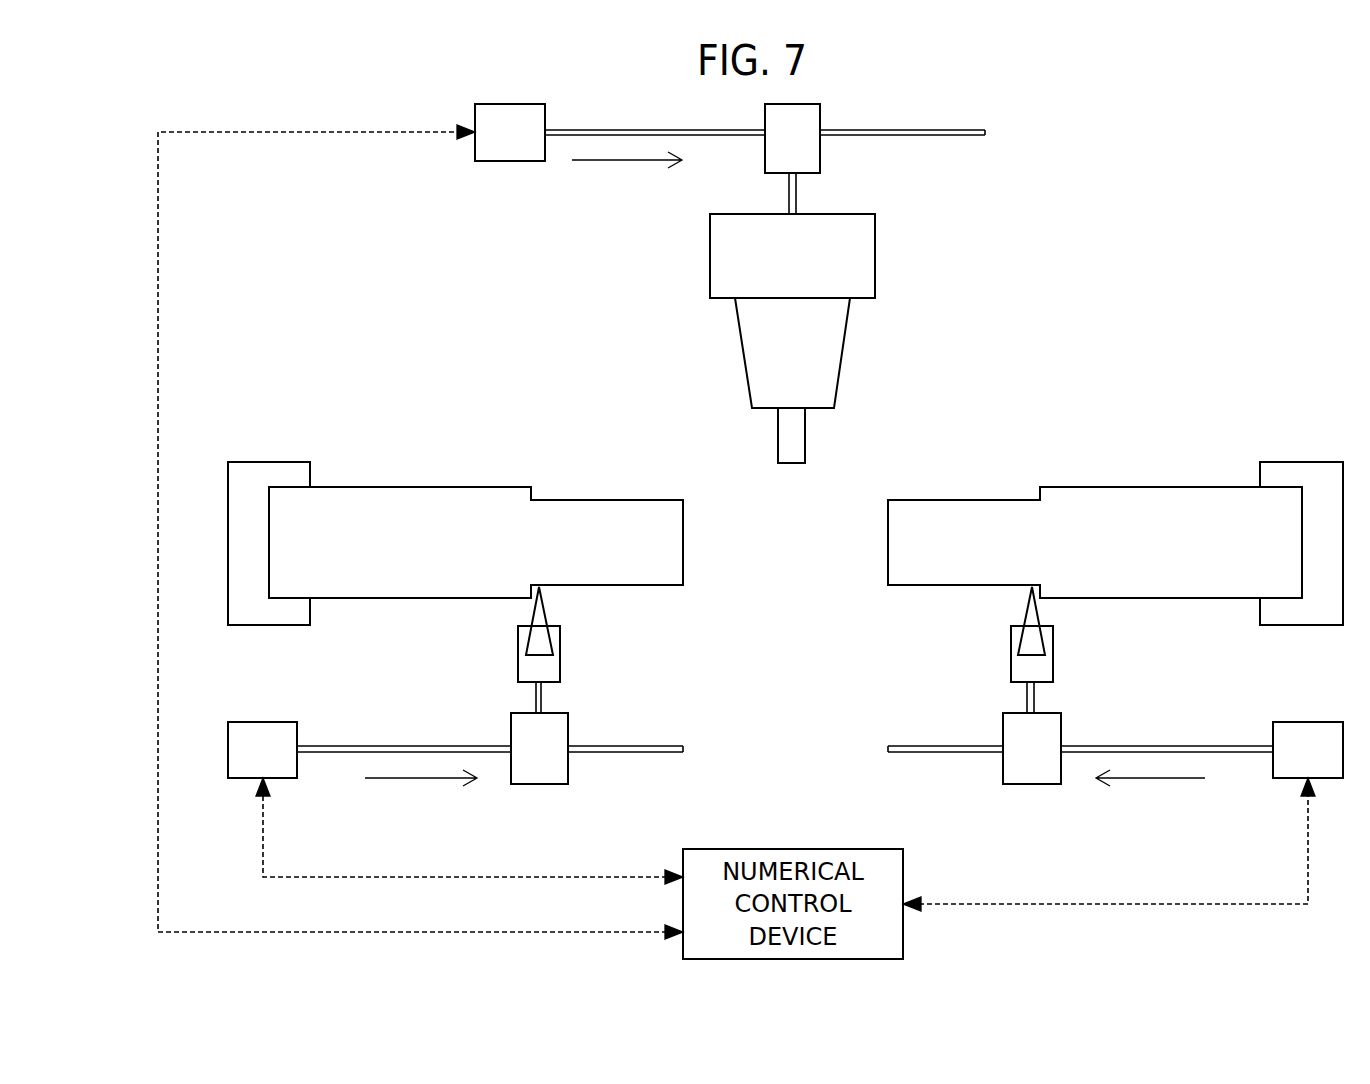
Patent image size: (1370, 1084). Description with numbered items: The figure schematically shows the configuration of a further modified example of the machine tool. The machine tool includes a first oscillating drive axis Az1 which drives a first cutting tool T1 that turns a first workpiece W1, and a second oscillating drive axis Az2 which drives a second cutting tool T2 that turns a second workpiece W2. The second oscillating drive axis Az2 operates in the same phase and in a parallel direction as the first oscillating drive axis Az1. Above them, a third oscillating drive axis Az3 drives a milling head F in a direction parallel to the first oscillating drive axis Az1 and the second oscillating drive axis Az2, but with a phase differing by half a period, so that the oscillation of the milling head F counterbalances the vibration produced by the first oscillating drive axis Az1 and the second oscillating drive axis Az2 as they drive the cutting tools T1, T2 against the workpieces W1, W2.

The milling head F is at (898, 284).
The first workpiece W1 is at (430, 487).
The second workpiece W2 is at (1118, 487).
The first cutting tool T1 is at (533, 611).
The second cutting tool T2 is at (1036, 611).
The first oscillating drive axis Az1 is at (421, 794).
The second oscillating drive axis Az2 is at (1150, 794).
The third oscillating drive axis Az3 is at (627, 177).